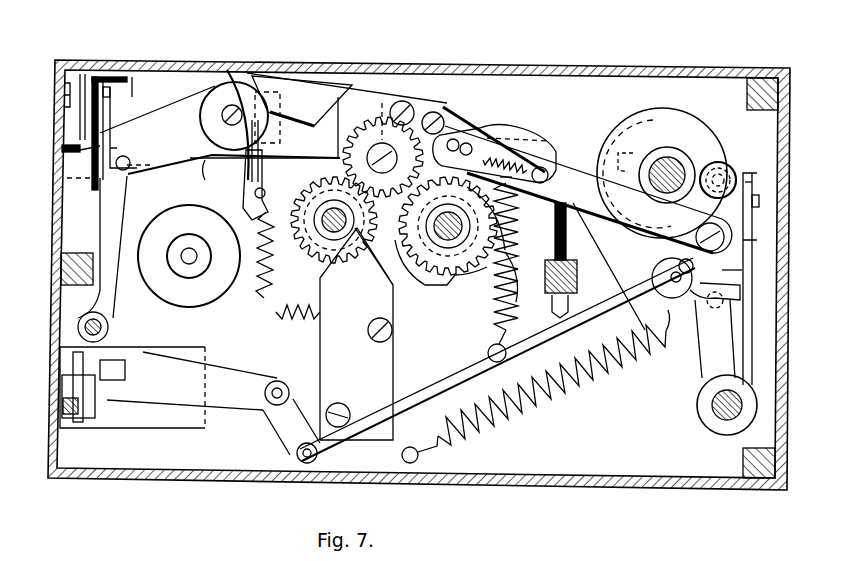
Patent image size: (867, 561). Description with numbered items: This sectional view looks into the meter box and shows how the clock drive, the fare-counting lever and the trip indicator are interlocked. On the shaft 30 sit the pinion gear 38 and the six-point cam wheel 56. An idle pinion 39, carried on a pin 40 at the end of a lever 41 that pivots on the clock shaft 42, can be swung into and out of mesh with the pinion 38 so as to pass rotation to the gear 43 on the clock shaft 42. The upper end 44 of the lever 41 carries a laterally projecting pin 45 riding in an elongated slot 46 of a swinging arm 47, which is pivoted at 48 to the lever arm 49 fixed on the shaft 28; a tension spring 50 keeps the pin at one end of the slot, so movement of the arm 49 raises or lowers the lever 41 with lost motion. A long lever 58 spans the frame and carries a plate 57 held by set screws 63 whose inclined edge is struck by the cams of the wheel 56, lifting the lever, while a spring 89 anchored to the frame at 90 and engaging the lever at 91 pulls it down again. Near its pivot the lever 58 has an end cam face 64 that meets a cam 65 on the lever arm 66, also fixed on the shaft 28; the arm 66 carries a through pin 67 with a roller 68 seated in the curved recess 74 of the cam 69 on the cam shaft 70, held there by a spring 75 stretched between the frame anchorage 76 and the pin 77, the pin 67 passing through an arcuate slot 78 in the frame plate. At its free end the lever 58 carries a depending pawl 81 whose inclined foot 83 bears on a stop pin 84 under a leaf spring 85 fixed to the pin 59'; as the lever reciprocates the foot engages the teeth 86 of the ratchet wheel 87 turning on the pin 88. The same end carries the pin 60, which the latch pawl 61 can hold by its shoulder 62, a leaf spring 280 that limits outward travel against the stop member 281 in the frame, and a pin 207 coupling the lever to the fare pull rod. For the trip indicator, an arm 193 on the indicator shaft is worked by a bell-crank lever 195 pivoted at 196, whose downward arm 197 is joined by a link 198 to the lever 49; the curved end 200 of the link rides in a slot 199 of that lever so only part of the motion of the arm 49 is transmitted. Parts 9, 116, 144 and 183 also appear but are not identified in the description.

The stop member 281 is at (122, 78).
The leaf spring 280 is at (157, 91).
The pin 59' is at (261, 108).
The pin 60 is at (128, 161).
The pin 207 is at (68, 150).
The shoulder 62 is at (131, 168).
The pawl 61 is at (121, 228).
The drum 116 is at (190, 250).
The leaf spring 85 is at (234, 116).
The ratchet wheel 87 is at (286, 322).
The pawl 81 is at (246, 174).
The stop pin 84 is at (262, 190).
The clock shaft 42 is at (334, 216).
The foot 83 is at (253, 197).
The pin 40 is at (339, 150).
The lever 41 is at (335, 154).
The idle pinion 39 is at (383, 148).
The lever arm 58 is at (338, 100).
The set screws 63 is at (403, 101).
The plate 57 is at (445, 113).
The elongated slot 46 is at (468, 140).
The pin 45 is at (507, 132).
The upper end 44 is at (550, 134).
The swinging arm 47 is at (577, 150).
The tension spring 50 is at (549, 177).
The engagement point 91 is at (516, 200).
The spring 89 is at (516, 238).
The six-point cam wheel 56 is at (500, 291).
The pinion gear 38 is at (445, 226).
The shaft 30 is at (443, 281).
The anchorage 90 is at (488, 355).
The gear 43 is at (357, 242).
The pin 88 is at (324, 276).
The teeth 86 is at (262, 291).
The roller 183 is at (110, 325).
The plunger 144 is at (100, 360).
The arm 193 is at (65, 378).
The lever 195 is at (145, 400).
The pivot 196 is at (270, 381).
The arm 197 is at (297, 452).
The link 198 is at (478, 374).
The spring 75 is at (607, 371).
The frame anchorage 76 is at (419, 457).
The end cam face 64 is at (648, 286).
The cam 65 is at (673, 328).
The pin 77 is at (738, 309).
The curved end 200 is at (710, 310).
The slot 199 is at (738, 275).
The pivot 48 is at (747, 240).
The lever arm 49 is at (762, 279).
The lever arm 66 is at (764, 197).
The arcuate slot 78 is at (752, 181).
The curved recess 74 is at (711, 226).
The through pin 67 is at (724, 166).
The roller 68 is at (732, 170).
The cam 69 is at (697, 127).
The cam shaft 70 is at (668, 158).
The bracket 9 is at (622, 160).
The shaft 28 is at (712, 405).